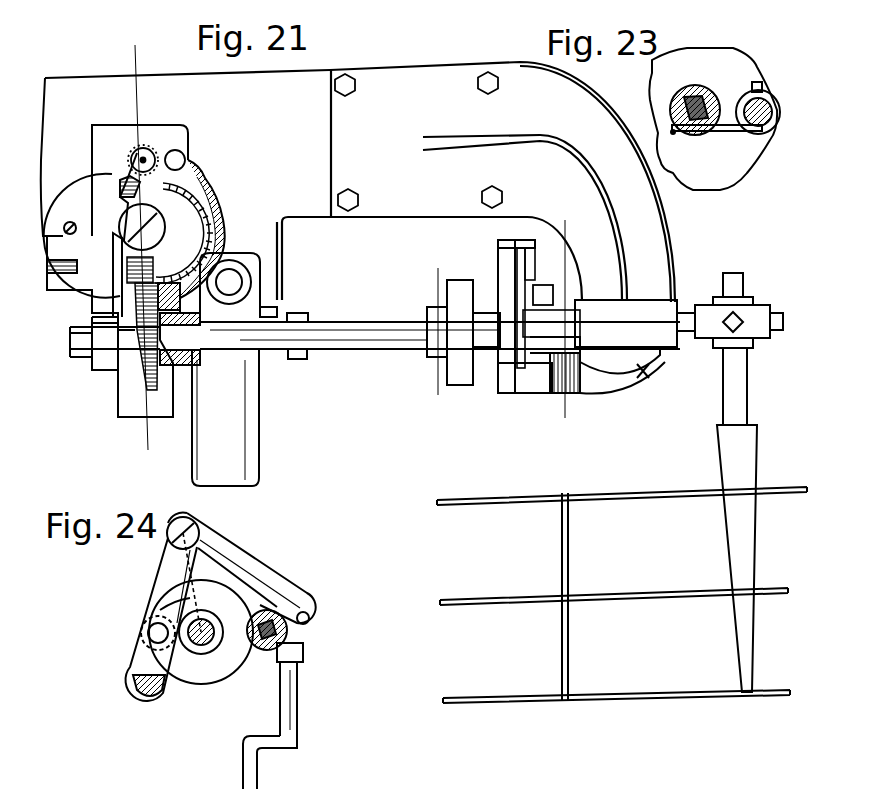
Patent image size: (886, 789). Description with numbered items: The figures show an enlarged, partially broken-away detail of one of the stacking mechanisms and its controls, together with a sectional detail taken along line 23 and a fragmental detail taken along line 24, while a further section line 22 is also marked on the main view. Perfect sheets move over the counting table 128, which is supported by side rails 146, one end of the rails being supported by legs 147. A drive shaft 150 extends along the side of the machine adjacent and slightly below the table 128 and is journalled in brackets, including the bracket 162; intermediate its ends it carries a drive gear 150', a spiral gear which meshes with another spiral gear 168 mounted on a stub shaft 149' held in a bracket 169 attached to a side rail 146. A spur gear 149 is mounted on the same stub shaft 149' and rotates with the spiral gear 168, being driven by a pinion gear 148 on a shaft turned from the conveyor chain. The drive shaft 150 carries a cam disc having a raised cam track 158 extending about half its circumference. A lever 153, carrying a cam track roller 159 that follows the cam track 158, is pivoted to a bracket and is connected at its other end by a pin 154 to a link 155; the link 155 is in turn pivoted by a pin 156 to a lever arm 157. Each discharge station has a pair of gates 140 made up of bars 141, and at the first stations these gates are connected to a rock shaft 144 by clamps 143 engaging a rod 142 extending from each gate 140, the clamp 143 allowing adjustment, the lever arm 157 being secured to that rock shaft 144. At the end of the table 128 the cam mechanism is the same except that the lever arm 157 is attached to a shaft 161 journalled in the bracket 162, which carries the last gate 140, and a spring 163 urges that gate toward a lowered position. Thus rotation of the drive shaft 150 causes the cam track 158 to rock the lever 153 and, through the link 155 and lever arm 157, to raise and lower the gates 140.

In FIG. 21, the section line 22- 22 is at (158, 56).
In FIG. 21, the section line 23— 23 is at (445, 273).
In FIG. 21, the section line 24— 24 is at (572, 222).
In FIG. 21, the counting table 128 is at (67, 293).
In FIG. 21, the gate 140 is at (745, 533).
In FIG. 24, the gate 140 is at (247, 767).
In FIG. 21, the bars 141 is at (617, 590).
In FIG. 21, the rod 142 is at (737, 383).
In FIG. 24, the rod 142 is at (287, 708).
In FIG. 21, the clamp 143 is at (755, 315).
In FIG. 24, the clamp 143 is at (300, 653).
In FIG. 24, the rock shaft 144 is at (307, 597).
In FIG. 21, the side rails 146 is at (360, 182).
In FIG. 21, the legs 147 is at (238, 448).
In FIG. 21, the pinion gear 148 is at (152, 150).
In FIG. 21, the spur gear 149 is at (193, 274).
In FIG. 21, the stub shaft 149' is at (192, 259).
In FIG. 21, the drive shaft 150 is at (375, 353).
In FIG. 23, the drive shaft 150 is at (660, 104).
In FIG. 24, the drive shaft 150 is at (269, 595).
In FIG. 21, the drive gear 150' is at (99, 367).
In FIG. 21, the lever 153 is at (505, 280).
In FIG. 24, the lever 153 is at (170, 577).
In FIG. 24, the pin 154 is at (197, 515).
In FIG. 21, the link 155 is at (523, 280).
In FIG. 24, the link 155 is at (225, 534).
In FIG. 21, the pin 156 is at (553, 297).
In FIG. 24, the pin 156 is at (323, 609).
In FIG. 21, the lever arm 157 is at (540, 282).
In FIG. 24, the lever arm 157 is at (313, 633).
In FIG. 21, the cam track 158 is at (490, 287).
In FIG. 24, the cam track 158 is at (217, 593).
In FIG. 21, the cam track roller 159 is at (487, 340).
In FIG. 24, the cam track roller 159 is at (143, 630).
In FIG. 21, the shaft 161 is at (688, 320).
In FIG. 23, the shaft 161 is at (773, 107).
In FIG. 21, the bracket 162 is at (648, 245).
In FIG. 24, the bracket 162 is at (157, 695).
In FIG. 21, the spring 163 is at (358, 322).
In FIG. 23, the spring 163 is at (727, 130).
In FIG. 21, the spiral gear 168 is at (127, 183).
In FIG. 21, the bracket 169 is at (108, 140).
In FIG. 23, the bracket 169 is at (753, 145).